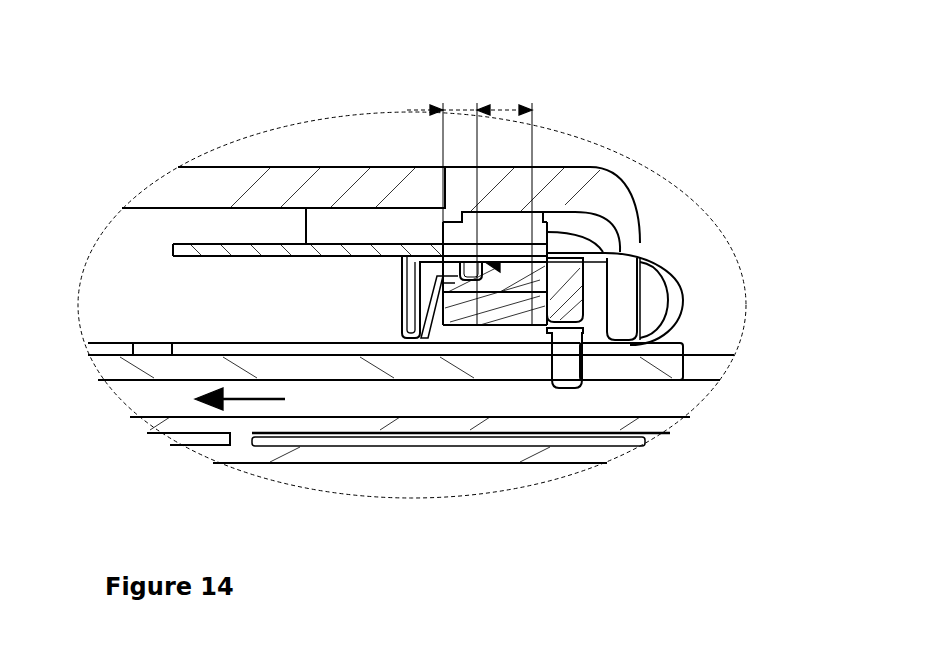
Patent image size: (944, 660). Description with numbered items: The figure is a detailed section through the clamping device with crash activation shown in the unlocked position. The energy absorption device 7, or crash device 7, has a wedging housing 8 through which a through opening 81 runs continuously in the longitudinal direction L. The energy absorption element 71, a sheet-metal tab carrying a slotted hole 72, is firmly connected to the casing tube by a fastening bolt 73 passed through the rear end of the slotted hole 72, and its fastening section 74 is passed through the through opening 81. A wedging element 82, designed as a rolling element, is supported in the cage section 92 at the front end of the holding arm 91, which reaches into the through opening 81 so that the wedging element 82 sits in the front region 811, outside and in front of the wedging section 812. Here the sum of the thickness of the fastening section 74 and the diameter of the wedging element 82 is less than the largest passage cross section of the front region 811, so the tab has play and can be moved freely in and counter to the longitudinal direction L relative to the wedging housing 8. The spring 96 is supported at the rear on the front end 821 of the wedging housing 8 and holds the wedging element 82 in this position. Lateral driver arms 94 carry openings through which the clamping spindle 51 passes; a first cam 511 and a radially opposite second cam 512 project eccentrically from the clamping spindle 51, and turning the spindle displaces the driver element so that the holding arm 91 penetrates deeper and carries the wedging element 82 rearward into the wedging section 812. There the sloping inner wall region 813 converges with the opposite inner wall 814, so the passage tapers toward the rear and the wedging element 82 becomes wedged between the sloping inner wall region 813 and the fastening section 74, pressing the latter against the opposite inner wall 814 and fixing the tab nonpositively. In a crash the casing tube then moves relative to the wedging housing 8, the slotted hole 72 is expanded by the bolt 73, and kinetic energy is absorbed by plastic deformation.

The energy absorption device 7 is at (396, 221).
The wedging housing 8 is at (558, 193).
The clamping spindle 51 is at (643, 233).
The energy absorption element 71 is at (688, 275).
The slotted hole 72 is at (270, 380).
The fastening bolt 73 is at (568, 388).
The fastening section 74 is at (494, 262).
The through opening 81 is at (505, 365).
The wedging element 82 is at (437, 222).
The holding arm 91 is at (430, 305).
The cage section 92 is at (443, 292).
The driver arm 94 is at (597, 302).
The spring 96 is at (325, 245).
The first cam 511 is at (575, 252).
The second cam 512 is at (560, 446).
The front region 811 is at (455, 108).
The wedging section 812 is at (505, 107).
The sloping inner wall region 813 is at (632, 344).
The opposite inner wall 814 is at (441, 222).
The front end 821 is at (462, 281).
The longitudinal direction L is at (262, 447).